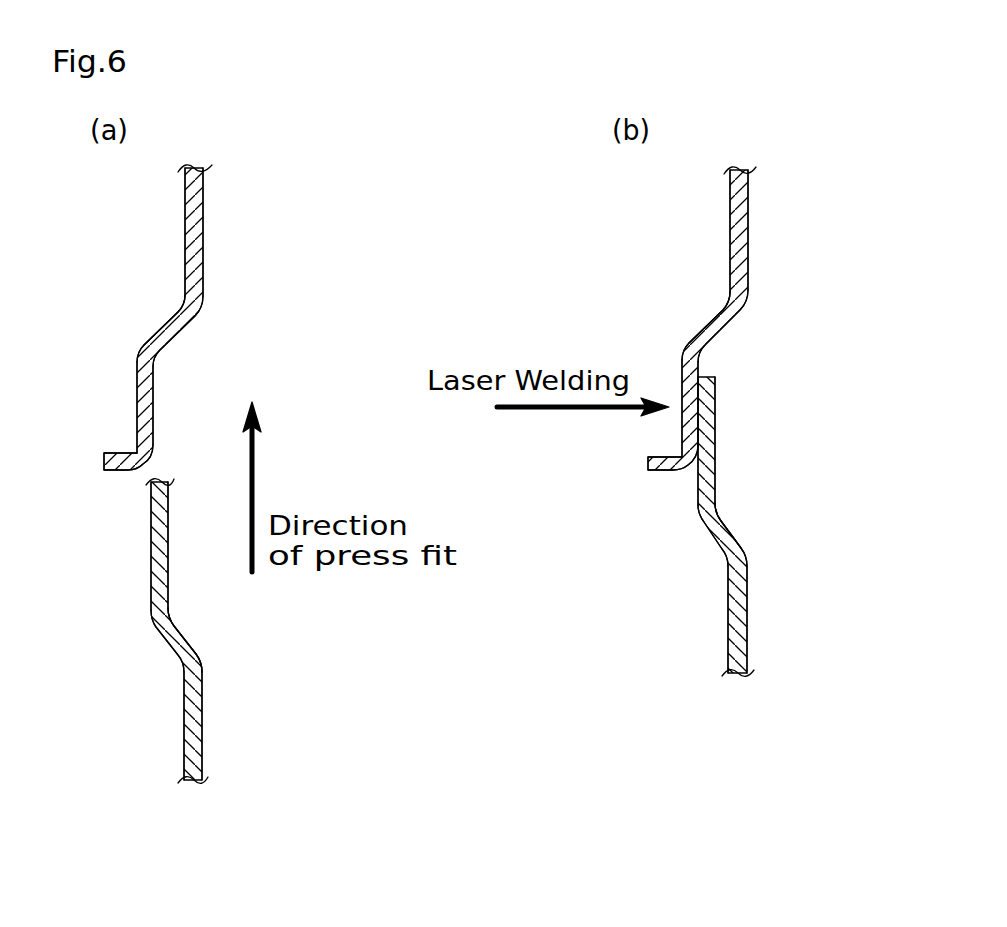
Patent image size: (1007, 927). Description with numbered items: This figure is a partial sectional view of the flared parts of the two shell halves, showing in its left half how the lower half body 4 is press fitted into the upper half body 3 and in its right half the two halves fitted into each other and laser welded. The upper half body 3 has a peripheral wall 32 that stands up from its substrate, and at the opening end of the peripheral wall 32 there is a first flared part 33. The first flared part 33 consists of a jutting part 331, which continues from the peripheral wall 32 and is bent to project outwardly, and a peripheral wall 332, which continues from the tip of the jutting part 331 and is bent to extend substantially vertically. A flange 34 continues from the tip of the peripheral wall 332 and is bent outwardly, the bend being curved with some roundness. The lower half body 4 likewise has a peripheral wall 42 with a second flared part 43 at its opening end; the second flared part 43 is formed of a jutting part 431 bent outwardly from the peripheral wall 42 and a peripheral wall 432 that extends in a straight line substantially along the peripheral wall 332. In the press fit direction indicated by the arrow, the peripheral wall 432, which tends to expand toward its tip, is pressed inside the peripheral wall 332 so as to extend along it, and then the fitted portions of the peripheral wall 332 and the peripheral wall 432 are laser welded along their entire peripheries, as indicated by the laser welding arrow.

The upper half body 3 is at (214, 277).
The peripheral wall 32 is at (190, 222).
The first flared part 33 is at (141, 331).
The jutting part 331 is at (183, 306).
The peripheral wall 332 is at (136, 411).
The flange 34 is at (112, 470).
The lower half body 4 is at (209, 680).
The peripheral wall 42 is at (200, 710).
The second flared part 43 is at (150, 620).
The jutting part 431 is at (186, 640).
The peripheral wall 432 is at (134, 543).